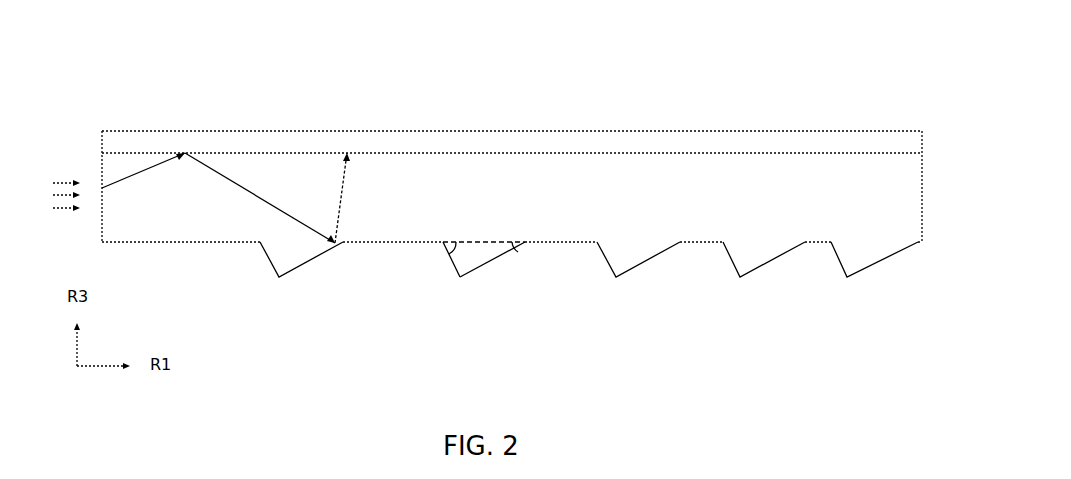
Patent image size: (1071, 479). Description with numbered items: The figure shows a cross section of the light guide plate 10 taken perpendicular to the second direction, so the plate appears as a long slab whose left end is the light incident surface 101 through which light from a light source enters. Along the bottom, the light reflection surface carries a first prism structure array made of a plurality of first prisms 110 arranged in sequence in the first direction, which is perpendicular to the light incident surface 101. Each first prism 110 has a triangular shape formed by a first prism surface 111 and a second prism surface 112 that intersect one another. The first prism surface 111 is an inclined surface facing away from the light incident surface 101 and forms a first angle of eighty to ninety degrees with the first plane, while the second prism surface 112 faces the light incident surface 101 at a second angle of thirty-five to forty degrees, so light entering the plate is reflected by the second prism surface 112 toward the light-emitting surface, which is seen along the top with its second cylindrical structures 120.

The light guide plate 10 is at (949, 32).
The light incident surface 101 is at (102, 167).
The first prism 110 is at (627, 257).
The first prism surface 111 is at (452, 265).
The second prism surface 112 is at (487, 263).
The second cylindrical structure 120 is at (877, 147).